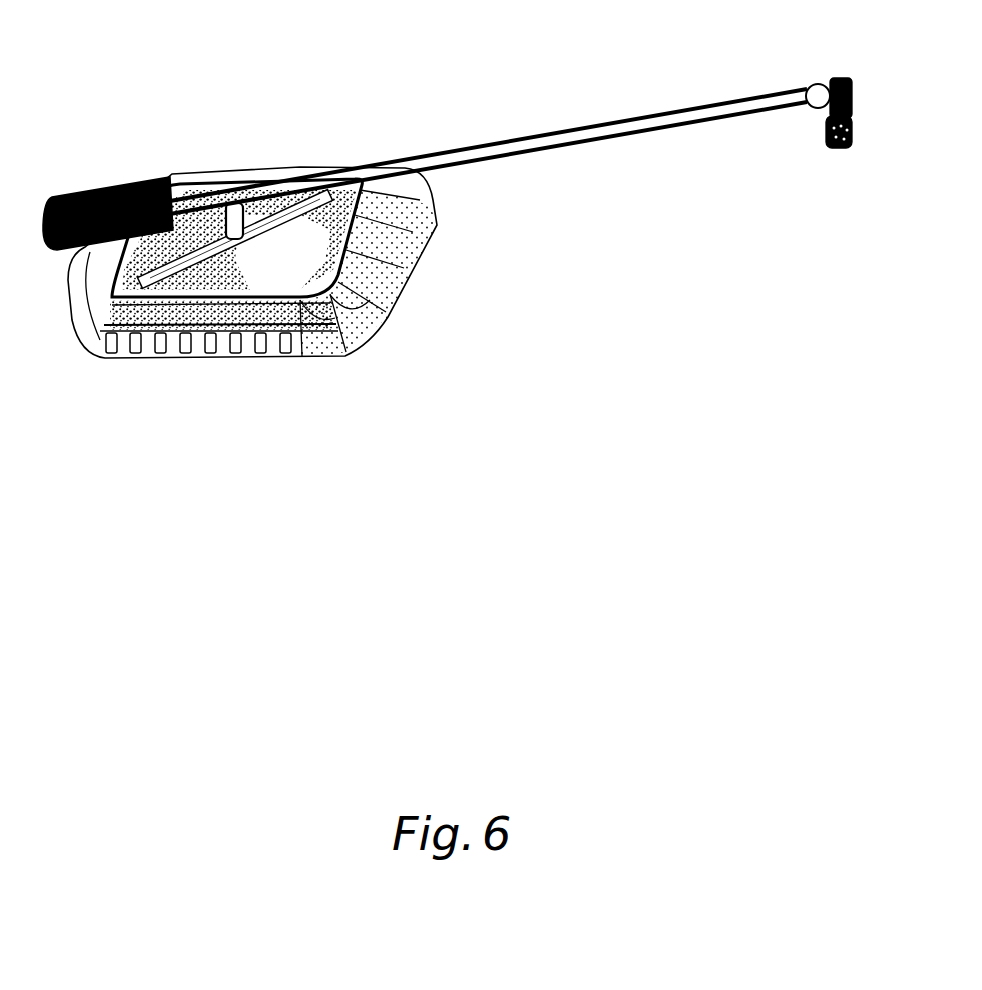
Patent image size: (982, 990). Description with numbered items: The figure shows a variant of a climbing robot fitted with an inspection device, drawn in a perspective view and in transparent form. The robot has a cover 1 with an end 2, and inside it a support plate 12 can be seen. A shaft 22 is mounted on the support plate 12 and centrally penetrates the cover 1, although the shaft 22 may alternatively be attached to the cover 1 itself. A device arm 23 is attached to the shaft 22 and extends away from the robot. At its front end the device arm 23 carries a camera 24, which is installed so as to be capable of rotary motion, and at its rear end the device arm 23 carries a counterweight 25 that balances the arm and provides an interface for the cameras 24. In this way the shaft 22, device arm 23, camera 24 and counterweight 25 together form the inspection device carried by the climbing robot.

The cover 1 is at (257, 343).
The end 2 is at (393, 281).
The support plate 12 is at (277, 355).
The shaft 22 is at (272, 167).
The device arm 23 is at (508, 142).
The camera 24 is at (817, 153).
The counterweight 25 is at (102, 187).